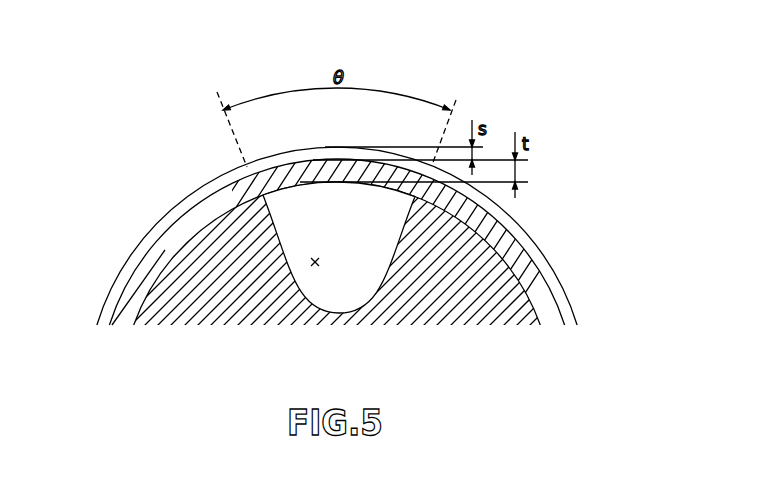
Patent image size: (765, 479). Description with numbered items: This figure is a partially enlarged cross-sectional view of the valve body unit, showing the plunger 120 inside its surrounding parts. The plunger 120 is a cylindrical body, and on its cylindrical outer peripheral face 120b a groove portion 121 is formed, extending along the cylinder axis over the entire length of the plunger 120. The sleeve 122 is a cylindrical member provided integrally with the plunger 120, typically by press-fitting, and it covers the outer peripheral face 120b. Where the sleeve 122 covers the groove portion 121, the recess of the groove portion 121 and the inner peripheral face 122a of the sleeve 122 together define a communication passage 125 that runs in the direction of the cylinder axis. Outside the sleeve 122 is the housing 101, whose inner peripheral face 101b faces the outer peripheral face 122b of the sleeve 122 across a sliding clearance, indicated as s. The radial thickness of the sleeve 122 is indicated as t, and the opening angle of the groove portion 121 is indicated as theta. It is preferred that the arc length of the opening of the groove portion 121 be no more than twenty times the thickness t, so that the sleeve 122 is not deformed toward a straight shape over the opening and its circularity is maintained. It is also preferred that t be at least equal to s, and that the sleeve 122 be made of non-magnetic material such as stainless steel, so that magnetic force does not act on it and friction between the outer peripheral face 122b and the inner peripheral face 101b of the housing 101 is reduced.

The housing 101 is at (367, 236).
The inner peripheral face of the housing 101b is at (158, 223).
The plunger 120 is at (364, 235).
The outer peripheral face of the plunger 120b is at (504, 251).
The groove portion 121 is at (270, 223).
The sleeve 122 is at (149, 231).
The inner peripheral face of the sleeve 122a is at (258, 203).
The outer peripheral face of the sleeve 122b is at (140, 263).
The communication passage 125 is at (313, 262).